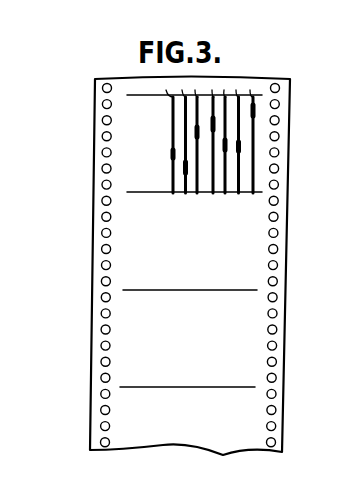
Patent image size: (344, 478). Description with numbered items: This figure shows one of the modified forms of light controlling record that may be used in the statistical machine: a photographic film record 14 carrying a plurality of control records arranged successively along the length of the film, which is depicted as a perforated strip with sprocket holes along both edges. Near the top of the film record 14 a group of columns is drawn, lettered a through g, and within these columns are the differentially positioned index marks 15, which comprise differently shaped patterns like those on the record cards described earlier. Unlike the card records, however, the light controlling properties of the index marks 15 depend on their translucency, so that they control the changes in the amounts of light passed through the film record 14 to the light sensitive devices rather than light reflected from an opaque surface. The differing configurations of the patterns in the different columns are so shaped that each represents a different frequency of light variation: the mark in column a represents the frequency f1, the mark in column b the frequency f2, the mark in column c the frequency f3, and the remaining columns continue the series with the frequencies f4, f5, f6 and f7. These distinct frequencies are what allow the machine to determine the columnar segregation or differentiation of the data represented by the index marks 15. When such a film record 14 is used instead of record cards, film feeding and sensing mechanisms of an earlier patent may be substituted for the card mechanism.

The photographic film record 14 is at (95, 230).
The index marks 15 is at (181, 170).
The frequency of light variations for column a f1 is at (172, 155).
The frequency of light variations for column b f2 is at (184, 175).
The frequency of light variations for column c f3 is at (196, 132).
The field column d f4 is at (210, 122).
The field column e f5 is at (225, 145).
The field column f f6 is at (239, 148).
The field column g f7 is at (255, 112).